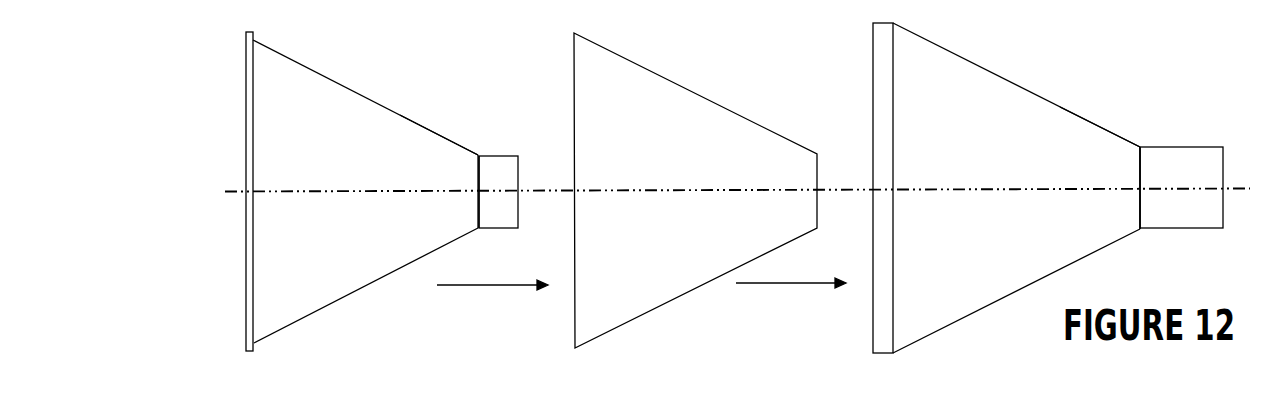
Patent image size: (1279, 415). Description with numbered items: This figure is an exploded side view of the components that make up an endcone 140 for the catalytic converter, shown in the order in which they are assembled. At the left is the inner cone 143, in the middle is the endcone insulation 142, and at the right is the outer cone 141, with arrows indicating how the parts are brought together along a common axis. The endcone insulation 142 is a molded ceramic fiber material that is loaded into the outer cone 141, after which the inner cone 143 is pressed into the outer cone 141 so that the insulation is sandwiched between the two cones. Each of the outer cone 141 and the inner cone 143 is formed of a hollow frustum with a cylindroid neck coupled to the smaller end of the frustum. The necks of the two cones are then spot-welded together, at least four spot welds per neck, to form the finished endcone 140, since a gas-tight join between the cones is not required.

The endcone 140 is at (1071, 188).
The outer cone 141 is at (977, 77).
The endcone insulation 142 is at (724, 120).
The inner cone 143 is at (292, 72).